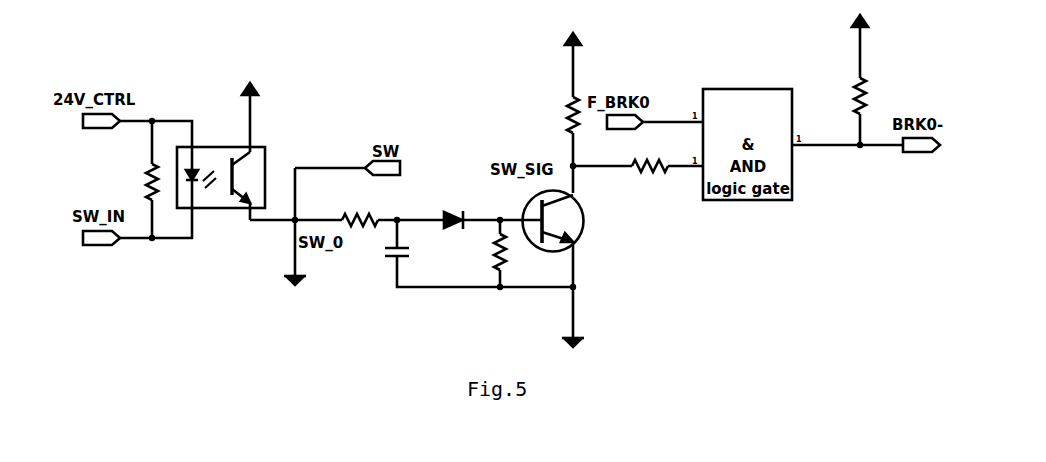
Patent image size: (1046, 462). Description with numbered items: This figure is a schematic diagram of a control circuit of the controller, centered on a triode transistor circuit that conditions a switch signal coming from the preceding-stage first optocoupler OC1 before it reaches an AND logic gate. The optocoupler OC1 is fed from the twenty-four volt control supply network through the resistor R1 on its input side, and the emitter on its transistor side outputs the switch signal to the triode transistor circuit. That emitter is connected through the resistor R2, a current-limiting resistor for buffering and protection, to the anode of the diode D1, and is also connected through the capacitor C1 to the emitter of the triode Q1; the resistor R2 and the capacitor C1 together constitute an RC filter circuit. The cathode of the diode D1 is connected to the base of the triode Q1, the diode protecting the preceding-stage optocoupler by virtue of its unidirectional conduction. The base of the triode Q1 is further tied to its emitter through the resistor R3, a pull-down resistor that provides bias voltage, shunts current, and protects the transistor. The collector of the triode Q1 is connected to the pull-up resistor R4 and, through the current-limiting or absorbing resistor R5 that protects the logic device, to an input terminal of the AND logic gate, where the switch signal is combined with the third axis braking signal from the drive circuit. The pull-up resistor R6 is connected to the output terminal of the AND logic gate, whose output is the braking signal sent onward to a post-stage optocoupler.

The resistor R1 is at (139, 182).
The first optocoupler OC1 is at (221, 190).
The resistor R2 is at (360, 211).
The capacitor C1 is at (410, 257).
The diode D1 is at (454, 212).
The resistor R3 is at (486, 252).
The triode Q1 is at (569, 221).
The resistor R4 is at (558, 115).
The resistor R5 is at (650, 155).
The resistor R6 is at (844, 96).